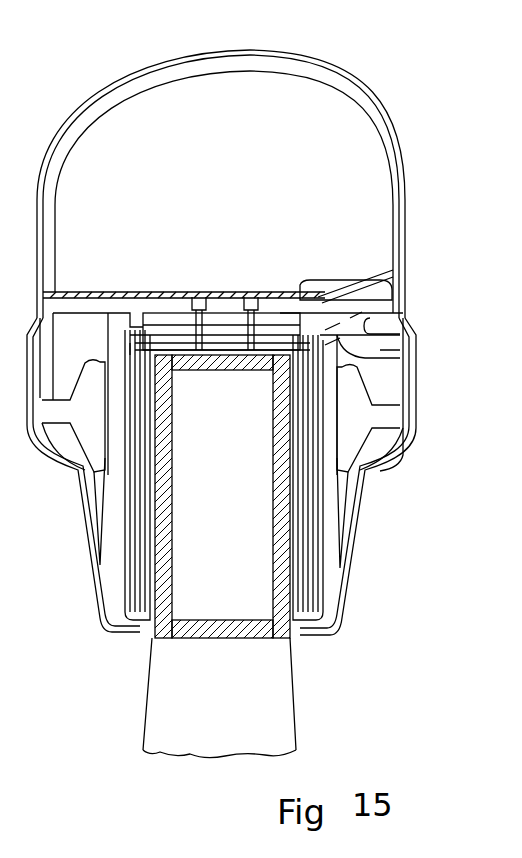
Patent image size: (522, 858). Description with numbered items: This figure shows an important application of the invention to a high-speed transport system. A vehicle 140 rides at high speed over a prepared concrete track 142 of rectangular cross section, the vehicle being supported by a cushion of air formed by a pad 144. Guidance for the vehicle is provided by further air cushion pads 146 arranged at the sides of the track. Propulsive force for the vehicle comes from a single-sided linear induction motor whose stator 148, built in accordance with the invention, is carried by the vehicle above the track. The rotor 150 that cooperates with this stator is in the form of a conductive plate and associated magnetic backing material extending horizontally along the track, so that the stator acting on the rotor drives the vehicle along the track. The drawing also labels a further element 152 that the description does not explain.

The vehicle 140 is at (333, 82).
The prepared concrete track 142 is at (155, 622).
The pad 144 is at (262, 320).
The air cushion pads 146 is at (148, 545).
The stator 148 is at (228, 338).
The rotor 150 is at (228, 360).
The left pin region 152 is at (162, 336).